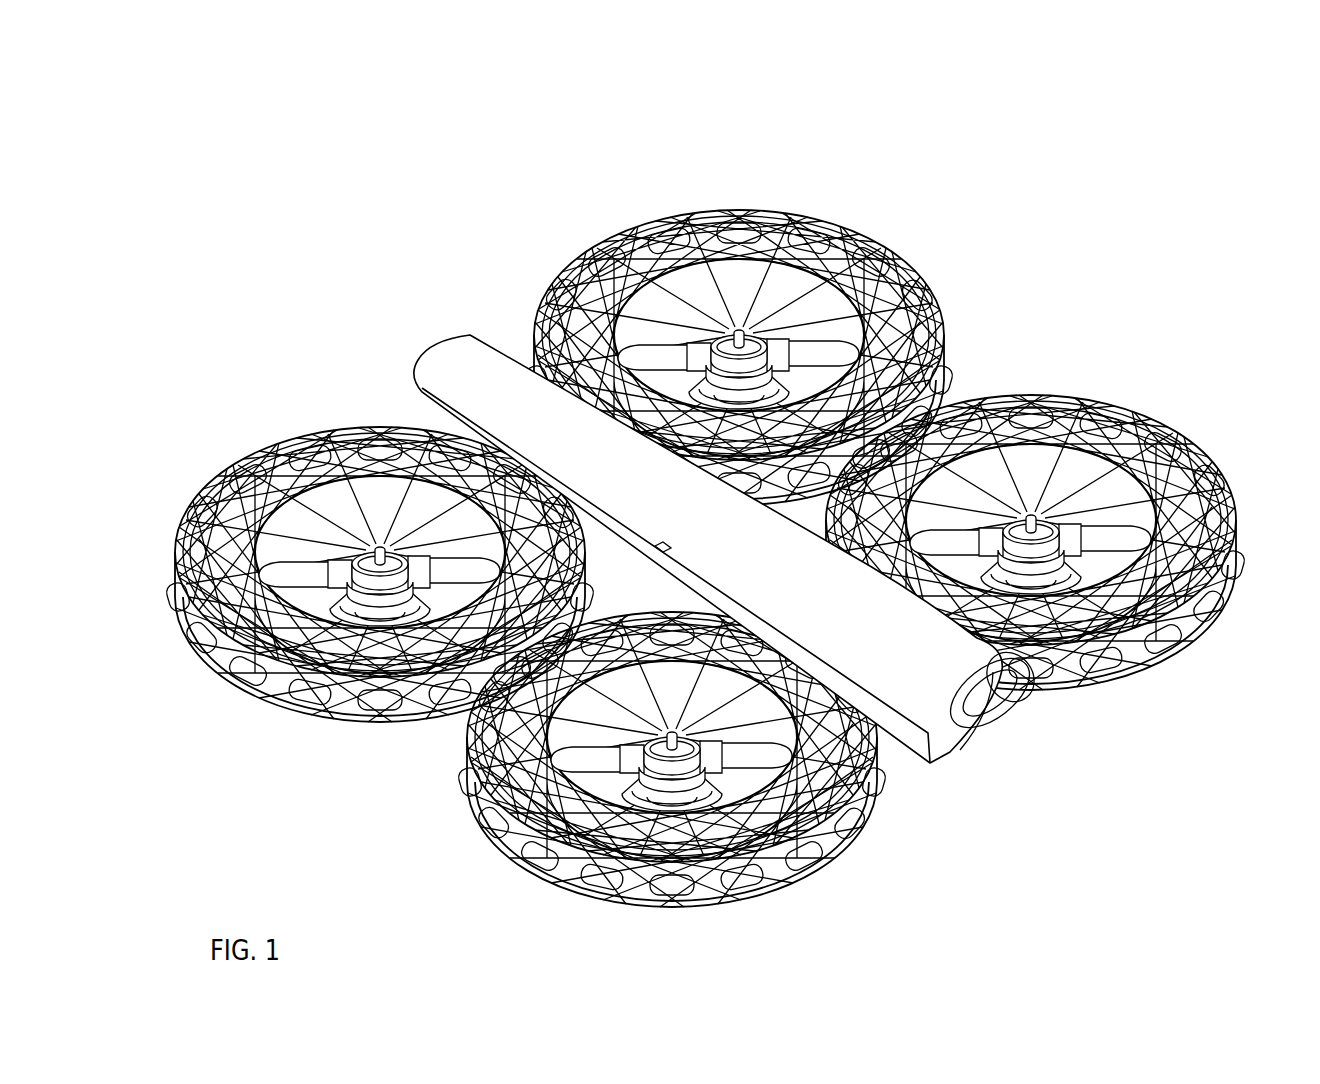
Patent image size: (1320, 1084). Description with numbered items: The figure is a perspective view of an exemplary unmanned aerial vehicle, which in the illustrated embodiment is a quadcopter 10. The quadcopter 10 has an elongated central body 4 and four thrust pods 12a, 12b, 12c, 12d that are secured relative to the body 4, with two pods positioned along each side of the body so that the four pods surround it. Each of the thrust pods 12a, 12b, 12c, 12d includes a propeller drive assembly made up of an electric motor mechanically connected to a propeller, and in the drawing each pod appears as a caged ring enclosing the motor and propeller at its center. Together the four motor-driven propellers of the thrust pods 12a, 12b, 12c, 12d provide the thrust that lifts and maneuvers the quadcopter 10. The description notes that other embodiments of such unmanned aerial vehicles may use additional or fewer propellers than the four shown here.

The quadcopter 10 is at (262, 144).
The body 4 is at (396, 354).
The thrust pod 12a is at (240, 444).
The thrust pod 12b is at (882, 222).
The thrust pod 12c is at (1208, 424).
The thrust pod 12d is at (865, 866).